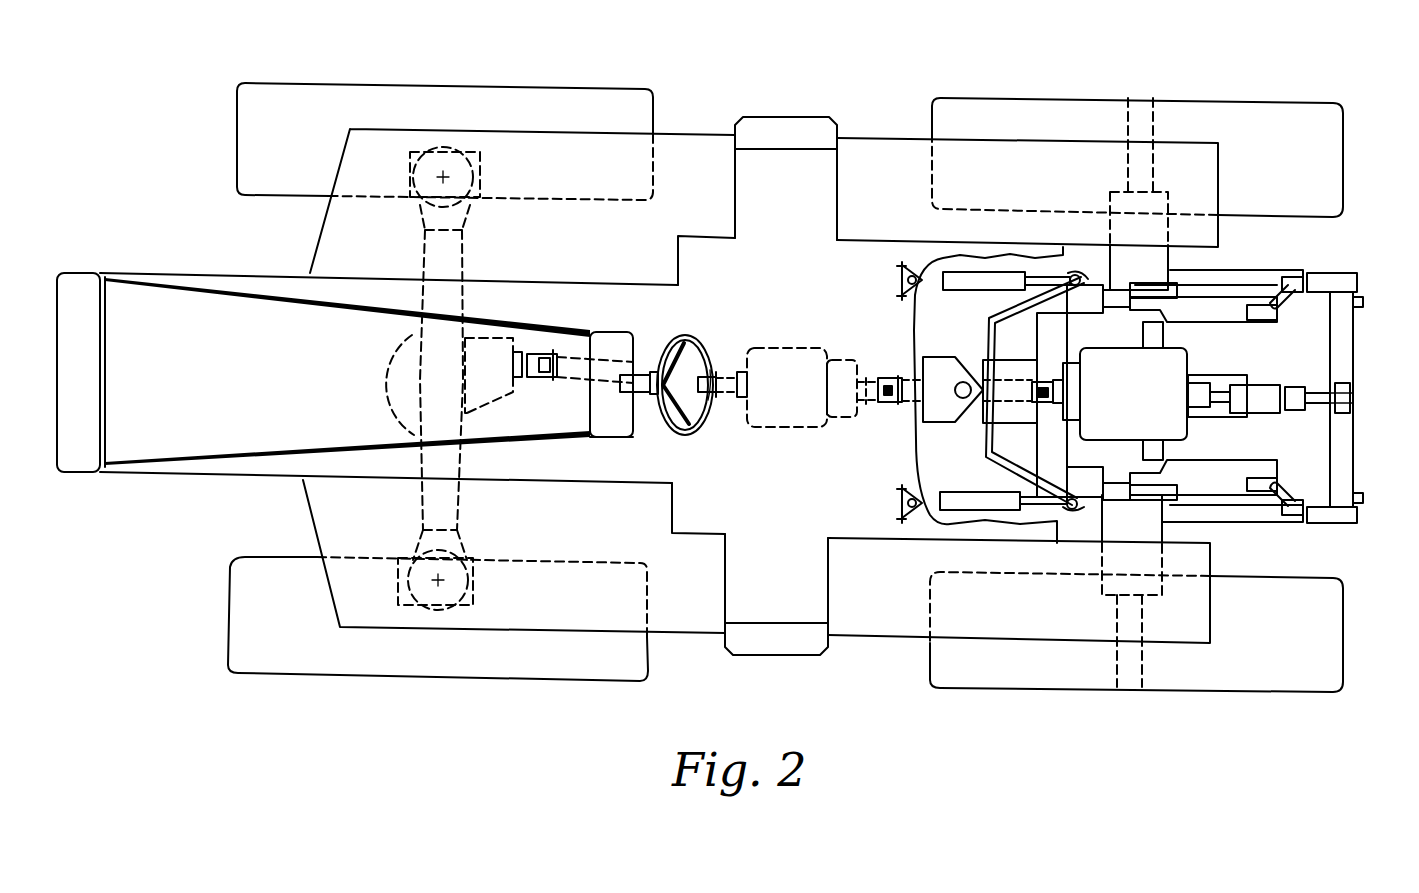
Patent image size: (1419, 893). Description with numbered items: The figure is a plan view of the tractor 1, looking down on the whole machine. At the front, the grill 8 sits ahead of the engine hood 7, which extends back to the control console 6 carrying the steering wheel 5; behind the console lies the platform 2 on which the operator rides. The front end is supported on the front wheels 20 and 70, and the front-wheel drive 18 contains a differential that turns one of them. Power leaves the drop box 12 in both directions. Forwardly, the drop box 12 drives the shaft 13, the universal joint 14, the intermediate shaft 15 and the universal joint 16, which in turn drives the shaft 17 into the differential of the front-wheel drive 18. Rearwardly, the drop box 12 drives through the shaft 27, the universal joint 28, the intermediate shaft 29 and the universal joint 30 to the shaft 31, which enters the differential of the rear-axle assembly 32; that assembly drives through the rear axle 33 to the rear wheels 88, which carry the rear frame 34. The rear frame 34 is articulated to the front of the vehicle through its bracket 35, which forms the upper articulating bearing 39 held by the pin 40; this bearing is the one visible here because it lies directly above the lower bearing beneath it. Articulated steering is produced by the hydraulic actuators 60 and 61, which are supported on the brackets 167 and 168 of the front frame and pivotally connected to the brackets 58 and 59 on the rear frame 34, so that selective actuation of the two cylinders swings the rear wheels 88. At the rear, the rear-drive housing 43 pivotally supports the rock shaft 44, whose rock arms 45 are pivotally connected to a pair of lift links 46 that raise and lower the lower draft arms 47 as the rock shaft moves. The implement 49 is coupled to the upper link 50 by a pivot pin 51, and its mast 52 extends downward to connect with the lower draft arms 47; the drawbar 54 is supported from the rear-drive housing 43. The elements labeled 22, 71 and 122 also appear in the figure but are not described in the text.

The tractor 1 is at (875, 138).
The platform 2 is at (698, 240).
The steering wheel 5 is at (682, 336).
The control console 6 is at (606, 425).
The engine hood 7 is at (197, 293).
The grill 8 is at (73, 280).
The drop box 12 is at (778, 349).
The shaft 13 is at (724, 405).
The universal joint 14 is at (712, 370).
The intermediate shaft 15 is at (600, 360).
The universal joint 16 is at (540, 374).
The shaft 17 is at (533, 352).
The front-wheel drive 18 is at (383, 392).
The front wheel 20 is at (238, 102).
The mast post 22 is at (427, 260).
The shaft 27 is at (878, 378).
The universal joint 28 is at (884, 403).
The intermediate shaft 29 is at (909, 358).
The universal joint 30 is at (1045, 404).
The shaft 31 is at (1063, 389).
The rear-axle assembly 32 is at (1082, 334).
The rear axle 33 is at (1150, 134).
The rear frame 34 is at (1000, 316).
The bracket 35 is at (997, 367).
The upper bearing 39 is at (974, 337).
The pin 40 is at (966, 399).
The rear-drive housing 43 is at (1185, 361).
The rock shaft 44 is at (1144, 445).
The rock arms 45 is at (1237, 321).
The lift links 46 is at (1282, 300).
The lower draft arms 47 is at (1246, 276).
The implement 49 is at (1357, 508).
The upper link 50 is at (1269, 388).
The pivot pin 51 is at (1338, 413).
The mast 52 is at (1332, 447).
The drawbar 54 is at (1265, 413).
The bracket 58 is at (1084, 278).
The bracket 59 is at (1087, 508).
The hydraulic actuator 60 is at (980, 272).
The hydraulic actuator 61 is at (971, 511).
The front wheel 70 is at (232, 636).
The wheel hub 71 is at (433, 583).
The rear wheels 88 is at (1287, 100).
The wheel hub 122 is at (449, 175).
The bracket 167 is at (903, 272).
The bracket 168 is at (897, 502).